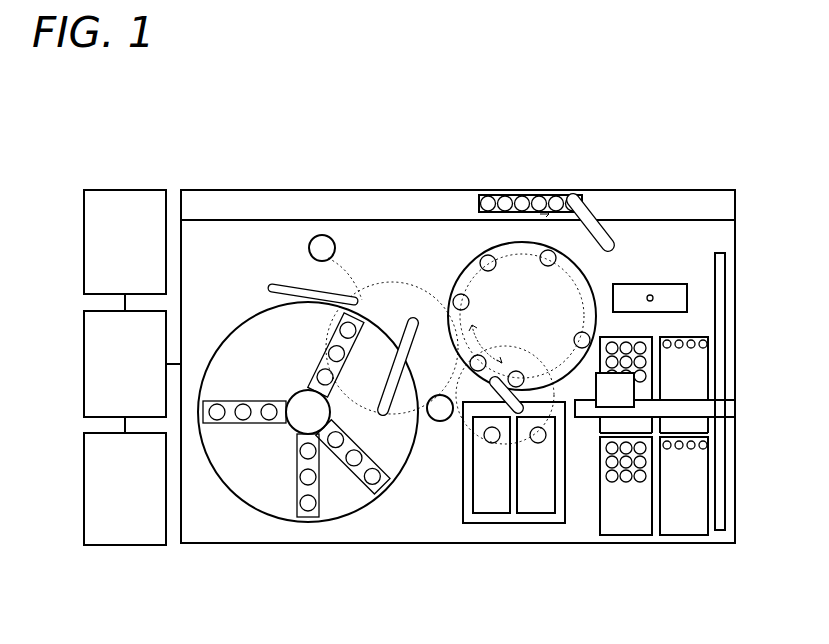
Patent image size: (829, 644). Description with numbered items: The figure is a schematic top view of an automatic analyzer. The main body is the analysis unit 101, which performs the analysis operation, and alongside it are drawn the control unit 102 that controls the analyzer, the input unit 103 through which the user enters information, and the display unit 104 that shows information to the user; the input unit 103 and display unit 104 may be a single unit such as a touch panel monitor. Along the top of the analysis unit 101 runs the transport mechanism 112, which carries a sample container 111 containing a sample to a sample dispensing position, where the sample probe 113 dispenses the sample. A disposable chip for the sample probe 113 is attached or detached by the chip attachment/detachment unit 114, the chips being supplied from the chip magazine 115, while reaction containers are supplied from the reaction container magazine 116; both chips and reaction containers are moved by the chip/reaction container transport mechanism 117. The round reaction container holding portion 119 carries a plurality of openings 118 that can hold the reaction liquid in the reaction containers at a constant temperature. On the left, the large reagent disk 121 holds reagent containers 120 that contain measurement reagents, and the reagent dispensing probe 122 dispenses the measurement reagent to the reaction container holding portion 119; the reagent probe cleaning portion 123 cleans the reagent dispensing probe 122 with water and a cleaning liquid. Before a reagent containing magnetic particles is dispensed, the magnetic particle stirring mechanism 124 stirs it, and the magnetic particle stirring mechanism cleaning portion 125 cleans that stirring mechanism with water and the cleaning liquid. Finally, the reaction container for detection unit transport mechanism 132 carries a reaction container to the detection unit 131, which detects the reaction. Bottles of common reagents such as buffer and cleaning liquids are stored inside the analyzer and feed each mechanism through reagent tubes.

The analysis unit 101 is at (458, 386).
The control unit 102 is at (97, 364).
The input unit 103 is at (97, 489).
The display unit 104 is at (97, 242).
The sample container 111 is at (514, 184).
The transport mechanism 112 is at (436, 186).
The sample probe 113 is at (620, 190).
The chip attachment/detachment unit 114 is at (659, 272).
The chip magazine 115 is at (696, 497).
The reaction container magazine 116 is at (618, 497).
The chip/reaction container transport mechanism 117 is at (572, 475).
The opening 118 is at (414, 463).
The reaction container holding portion 119 is at (590, 276).
The reagent container 120 is at (300, 355).
The reagent disk 121 is at (302, 416).
The reagent dispensing probe 122 is at (414, 338).
The reagent probe cleaning portion 123 is at (391, 469).
The magnetic particle stirring mechanism 124 is at (288, 279).
The magnetic particle stirring mechanism cleaning portion 125 is at (284, 243).
The detection unit 131 is at (485, 513).
The reaction container for detection unit transport mechanism 132 is at (469, 462).